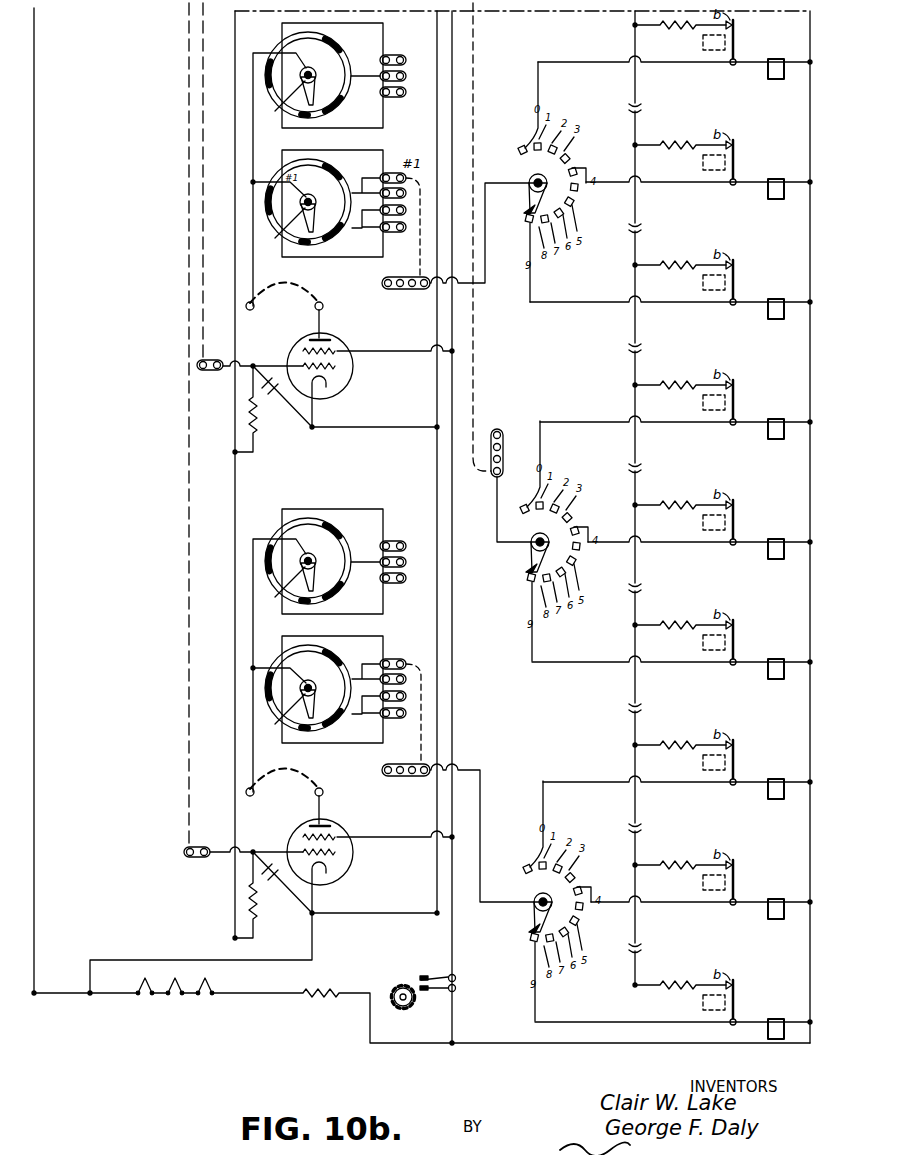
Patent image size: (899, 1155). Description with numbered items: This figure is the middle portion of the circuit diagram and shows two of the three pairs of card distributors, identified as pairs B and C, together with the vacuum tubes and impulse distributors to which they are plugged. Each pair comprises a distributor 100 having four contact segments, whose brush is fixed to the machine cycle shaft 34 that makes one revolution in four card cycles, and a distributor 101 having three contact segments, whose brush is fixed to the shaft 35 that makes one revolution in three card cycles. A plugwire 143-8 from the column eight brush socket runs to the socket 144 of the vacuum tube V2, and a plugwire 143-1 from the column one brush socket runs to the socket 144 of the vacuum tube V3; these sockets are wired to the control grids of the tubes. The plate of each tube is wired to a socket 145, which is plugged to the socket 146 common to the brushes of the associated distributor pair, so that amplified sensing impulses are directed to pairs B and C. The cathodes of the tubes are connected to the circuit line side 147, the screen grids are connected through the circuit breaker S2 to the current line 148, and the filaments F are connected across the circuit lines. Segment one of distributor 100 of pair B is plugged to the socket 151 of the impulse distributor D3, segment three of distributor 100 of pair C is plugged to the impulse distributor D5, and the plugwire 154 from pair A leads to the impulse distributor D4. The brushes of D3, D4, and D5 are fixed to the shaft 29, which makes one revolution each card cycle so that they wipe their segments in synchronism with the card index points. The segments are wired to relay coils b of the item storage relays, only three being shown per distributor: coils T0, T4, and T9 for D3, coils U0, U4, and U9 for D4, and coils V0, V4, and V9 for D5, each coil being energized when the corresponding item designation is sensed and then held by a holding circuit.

The distributor 101 is at (345, 56).
The shaft 35 is at (281, 104).
The distributor 100 is at (340, 172).
The machine cycle shaft 34 is at (282, 228).
The socket 146 is at (252, 310).
The socket 145 is at (324, 304).
The socket 144 is at (216, 372).
The socket 151 is at (400, 290).
The plugwire 154 is at (478, 379).
The plugwire 143-8 is at (198, 266).
The plugwire 143-1 is at (188, 640).
The circuit line side 147 is at (37, 719).
The current line 148 is at (809, 925).
The shaft 29 is at (404, 1007).
The vacuum tube V2 is at (343, 383).
The vacuum tube V3 is at (343, 869).
The impulse distributor D3 is at (518, 200).
The impulse distributor D4 is at (520, 559).
The impulse distributor D5 is at (523, 918).
The circuit breaker S2 is at (437, 976).
The filaments F is at (160, 988).
The distributor pair B is at (405, 128).
The distributor pair C is at (405, 629).
The relay coil b is at (684, 36).
The relay coil T0 is at (776, 79).
The relay coil T4 is at (776, 199).
The relay coil T9 is at (776, 319).
The relay coil U0 is at (768, 432).
The relay coil U4 is at (768, 555).
The relay coil U9 is at (768, 675).
The relay coil V0 is at (768, 792).
The relay coil V4 is at (768, 912).
The relay coil V9 is at (777, 1024).